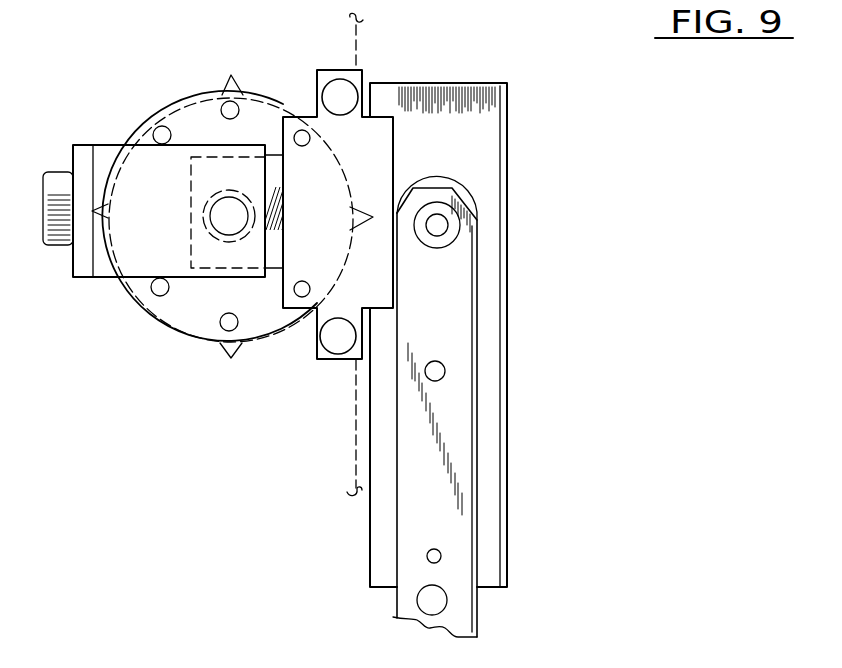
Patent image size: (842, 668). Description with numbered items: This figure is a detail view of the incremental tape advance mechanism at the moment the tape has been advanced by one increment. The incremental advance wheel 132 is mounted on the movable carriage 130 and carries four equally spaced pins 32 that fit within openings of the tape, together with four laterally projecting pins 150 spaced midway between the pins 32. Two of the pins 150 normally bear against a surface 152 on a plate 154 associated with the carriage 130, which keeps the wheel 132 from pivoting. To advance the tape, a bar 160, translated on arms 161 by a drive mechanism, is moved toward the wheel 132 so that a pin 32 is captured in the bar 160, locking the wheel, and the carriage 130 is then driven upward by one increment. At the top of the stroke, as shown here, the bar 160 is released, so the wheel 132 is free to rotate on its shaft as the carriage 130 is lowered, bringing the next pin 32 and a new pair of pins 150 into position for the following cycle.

The pin 32 is at (233, 80).
The movable carriage 130 is at (435, 319).
The incremental advance wheel 132 is at (203, 313).
The pin 150 is at (155, 130).
The surface 152 is at (320, 208).
The plate 154 is at (352, 140).
The bar 160 is at (110, 268).
The arm 161 is at (108, 162).